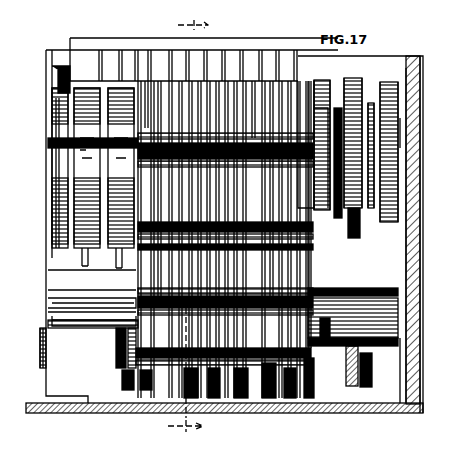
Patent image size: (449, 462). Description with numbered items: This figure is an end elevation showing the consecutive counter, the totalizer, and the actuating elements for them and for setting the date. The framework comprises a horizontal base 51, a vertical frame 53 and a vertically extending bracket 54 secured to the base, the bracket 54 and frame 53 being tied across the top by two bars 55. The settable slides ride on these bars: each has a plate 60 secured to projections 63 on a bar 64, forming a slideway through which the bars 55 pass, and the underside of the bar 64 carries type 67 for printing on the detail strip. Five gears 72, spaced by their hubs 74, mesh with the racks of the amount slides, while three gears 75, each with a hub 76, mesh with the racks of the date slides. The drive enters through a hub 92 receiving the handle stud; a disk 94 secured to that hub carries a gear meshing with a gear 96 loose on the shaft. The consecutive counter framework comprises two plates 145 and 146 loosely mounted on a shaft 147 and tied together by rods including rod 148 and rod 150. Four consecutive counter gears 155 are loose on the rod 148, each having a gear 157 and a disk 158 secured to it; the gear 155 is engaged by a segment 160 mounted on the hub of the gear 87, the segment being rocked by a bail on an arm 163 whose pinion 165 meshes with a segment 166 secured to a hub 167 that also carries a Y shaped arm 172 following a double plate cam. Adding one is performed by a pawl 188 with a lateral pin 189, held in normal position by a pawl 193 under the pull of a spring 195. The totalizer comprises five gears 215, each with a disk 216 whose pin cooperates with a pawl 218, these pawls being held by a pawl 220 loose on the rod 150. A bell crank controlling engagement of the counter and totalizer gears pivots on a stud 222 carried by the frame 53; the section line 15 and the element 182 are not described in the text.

The section line 15 is at (189, 233).
The horizontal base 51 is at (395, 404).
The vertical frame 53 is at (410, 196).
The vertically extending bracket 54 is at (38, 240).
The tie bars 55 is at (362, 50).
The plate 60 is at (70, 36).
The projections 63 is at (248, 52).
The bar 64 is at (65, 58).
The type 67 is at (50, 100).
The gears 72 is at (300, 82).
The hubs 74 is at (232, 132).
The gears 75 is at (58, 132).
The hub 76 is at (48, 172).
The gear 87 is at (138, 68).
The hub 92 is at (398, 123).
The disk 94 is at (398, 73).
The gear 96 is at (384, 90).
The plate 145 is at (112, 330).
The plate 146 is at (298, 378).
The shaft 147 is at (82, 312).
The rod 148 is at (110, 262).
The rod 150 is at (265, 362).
The consecutive counter gears 155 is at (120, 275).
The gear 157 is at (122, 268).
The disk 158 is at (114, 250).
The segment 160 is at (150, 80).
The arm 163 is at (312, 130).
The pinion 165 is at (300, 130).
The segment 166 is at (300, 238).
The hub 167 is at (318, 332).
The Y shaped arm 172 is at (340, 340).
The shaft 182 is at (281, 206).
The pawl 188 is at (183, 372).
The pin 189 is at (205, 370).
The pawl 193 is at (150, 392).
The spring 195 is at (114, 372).
The totalizer gears 215 is at (225, 290).
The disk 216 is at (232, 165).
The pawl 218 is at (282, 298).
The pawl 220 is at (282, 374).
The stud 222 is at (235, 372).